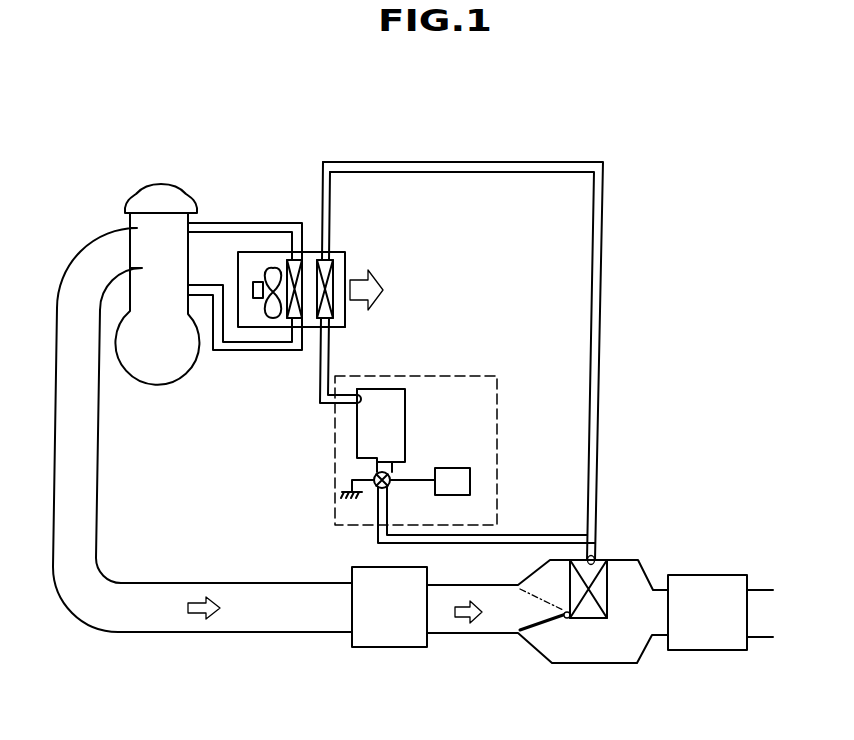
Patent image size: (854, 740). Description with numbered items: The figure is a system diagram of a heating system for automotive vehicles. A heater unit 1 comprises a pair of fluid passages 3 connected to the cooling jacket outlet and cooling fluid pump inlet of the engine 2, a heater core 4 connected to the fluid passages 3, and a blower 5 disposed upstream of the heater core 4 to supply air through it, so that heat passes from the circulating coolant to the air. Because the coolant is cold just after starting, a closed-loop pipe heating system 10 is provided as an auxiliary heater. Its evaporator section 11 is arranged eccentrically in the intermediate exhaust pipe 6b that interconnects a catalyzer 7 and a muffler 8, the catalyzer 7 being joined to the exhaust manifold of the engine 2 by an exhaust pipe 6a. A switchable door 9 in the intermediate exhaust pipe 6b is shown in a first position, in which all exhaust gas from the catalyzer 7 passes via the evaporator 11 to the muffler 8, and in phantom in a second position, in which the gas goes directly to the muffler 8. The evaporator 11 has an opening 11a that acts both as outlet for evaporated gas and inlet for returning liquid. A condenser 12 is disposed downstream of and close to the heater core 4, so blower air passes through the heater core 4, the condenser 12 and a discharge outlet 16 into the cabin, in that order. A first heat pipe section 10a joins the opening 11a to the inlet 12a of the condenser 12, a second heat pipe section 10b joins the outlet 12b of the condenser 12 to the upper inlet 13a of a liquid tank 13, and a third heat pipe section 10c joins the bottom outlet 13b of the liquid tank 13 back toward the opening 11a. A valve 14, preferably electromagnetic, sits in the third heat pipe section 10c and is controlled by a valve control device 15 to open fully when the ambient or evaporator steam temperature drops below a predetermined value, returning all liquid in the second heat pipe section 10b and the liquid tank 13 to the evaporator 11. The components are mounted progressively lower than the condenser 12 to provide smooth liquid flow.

The heater unit 1 is at (268, 252).
The engine 2 is at (168, 370).
The fluid passages 3 is at (212, 223).
The heater core 4 is at (300, 258).
The blower 5 is at (265, 302).
The exhaust pipe 6a is at (101, 522).
The intermediate exhaust pipe 6b is at (491, 633).
The catalyzer 7 is at (395, 643).
The muffler 8 is at (705, 585).
The switchable door 9 is at (530, 632).
The closed-loop pipe heating system 10 is at (493, 361).
The first heat pipe section 10a is at (601, 241).
The second heat pipe section 10b is at (331, 350).
The third heat pipe section 10c is at (532, 539).
The evaporator section 11 is at (608, 580).
The opening 11a is at (593, 555).
The condenser 12 is at (335, 290).
The inlet of the condenser 12a is at (323, 262).
The outlet of the condenser 12b is at (321, 322).
The liquid tank 13 is at (394, 436).
The upper inlet 13a is at (360, 404).
The bottom outlet 13b is at (386, 462).
The valve 14 is at (390, 487).
The valve control device 15 is at (450, 475).
The discharge outlet 16 is at (345, 313).